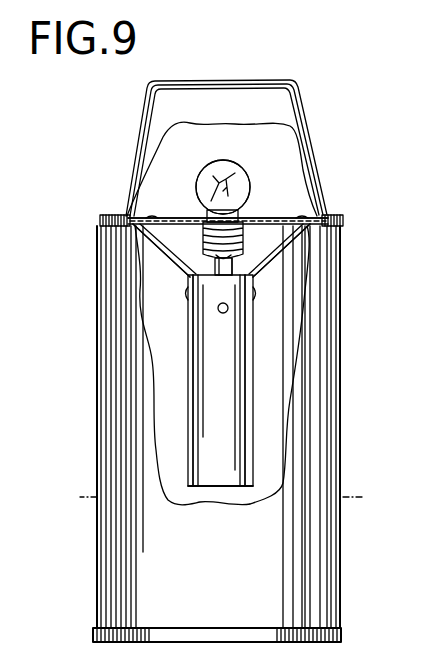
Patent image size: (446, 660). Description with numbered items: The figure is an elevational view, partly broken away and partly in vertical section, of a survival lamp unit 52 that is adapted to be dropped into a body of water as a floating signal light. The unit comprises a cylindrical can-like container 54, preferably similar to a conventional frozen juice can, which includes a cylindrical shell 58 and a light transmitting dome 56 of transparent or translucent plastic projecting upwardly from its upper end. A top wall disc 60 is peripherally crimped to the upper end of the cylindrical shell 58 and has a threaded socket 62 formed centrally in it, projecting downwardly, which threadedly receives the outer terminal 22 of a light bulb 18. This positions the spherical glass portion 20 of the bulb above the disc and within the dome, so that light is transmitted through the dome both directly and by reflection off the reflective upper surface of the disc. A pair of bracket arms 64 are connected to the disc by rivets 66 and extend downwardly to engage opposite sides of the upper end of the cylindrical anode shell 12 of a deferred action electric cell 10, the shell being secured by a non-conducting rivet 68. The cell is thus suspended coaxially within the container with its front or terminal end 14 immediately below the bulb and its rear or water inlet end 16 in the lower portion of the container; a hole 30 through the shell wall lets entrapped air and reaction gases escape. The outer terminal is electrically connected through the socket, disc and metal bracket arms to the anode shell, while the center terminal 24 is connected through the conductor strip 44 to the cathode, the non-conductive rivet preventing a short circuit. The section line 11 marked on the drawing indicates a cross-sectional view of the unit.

The deferred action electric cell 10 is at (199, 491).
The section line 11- 11 is at (80, 497).
The cylindrical anode shell 12 is at (189, 343).
The front or terminal end 14 is at (186, 274).
The rear or water inlet end 16 is at (246, 502).
The light bulb 18 is at (221, 150).
The spherical glass portion 20 is at (205, 177).
The outer terminal 22 is at (203, 237).
The center terminal 24 is at (219, 380).
The hole 30 is at (225, 313).
The conductor strip 44 is at (232, 275).
The survival lamp unit 52 is at (350, 203).
The cylindrical can-like container 54 is at (347, 272).
The light transmitting dome 56 is at (315, 130).
The cylindrical shell 58 is at (330, 390).
The top wall disc 60 is at (261, 218).
The threaded socket 62 is at (271, 254).
The bracket arms 64 is at (178, 262).
The rivets 66 is at (150, 219).
The non-conducting rivet 68 is at (257, 293).